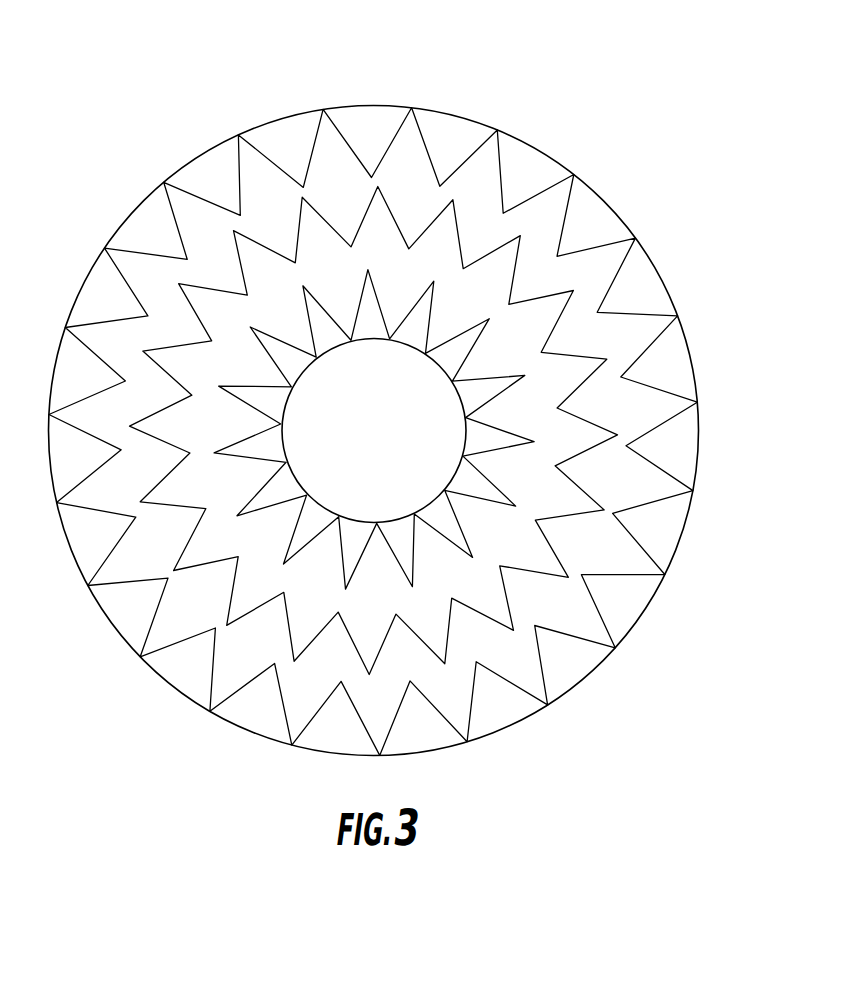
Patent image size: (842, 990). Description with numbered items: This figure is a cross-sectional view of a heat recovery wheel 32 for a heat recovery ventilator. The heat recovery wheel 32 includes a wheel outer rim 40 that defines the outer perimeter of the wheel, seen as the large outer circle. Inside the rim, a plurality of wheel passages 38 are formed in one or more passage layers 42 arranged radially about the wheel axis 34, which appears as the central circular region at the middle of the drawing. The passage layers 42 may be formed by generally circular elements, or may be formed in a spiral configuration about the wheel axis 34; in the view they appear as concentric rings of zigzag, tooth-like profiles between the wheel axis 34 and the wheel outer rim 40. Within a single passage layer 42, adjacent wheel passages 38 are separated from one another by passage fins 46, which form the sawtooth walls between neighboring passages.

The heat recovery wheel 32 is at (413, 396).
The wheel axis 34 is at (432, 460).
The wheel passages 38 is at (655, 458).
The wheel outer rim 40 is at (203, 156).
The passage layers 42 is at (434, 281).
The passage fins 46 is at (185, 518).